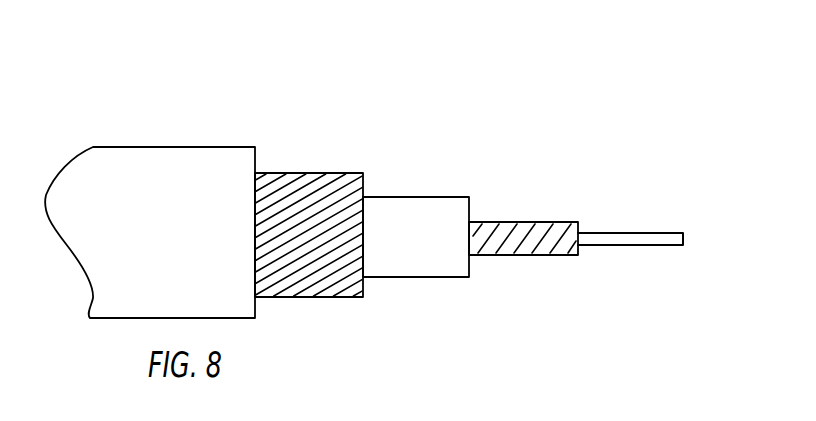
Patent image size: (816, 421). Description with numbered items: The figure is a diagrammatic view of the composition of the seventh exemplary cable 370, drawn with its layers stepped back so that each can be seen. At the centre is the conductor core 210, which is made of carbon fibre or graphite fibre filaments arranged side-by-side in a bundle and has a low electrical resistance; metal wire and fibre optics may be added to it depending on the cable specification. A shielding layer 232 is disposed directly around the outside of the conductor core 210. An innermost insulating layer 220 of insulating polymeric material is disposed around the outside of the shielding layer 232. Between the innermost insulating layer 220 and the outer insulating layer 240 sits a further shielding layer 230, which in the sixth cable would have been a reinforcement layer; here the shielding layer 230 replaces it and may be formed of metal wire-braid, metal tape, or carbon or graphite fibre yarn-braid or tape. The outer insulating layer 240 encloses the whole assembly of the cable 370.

The outer insulating layer 240 is at (137, 148).
The shielding layer 230 is at (273, 173).
The innermost insulating layer 220 is at (415, 196).
The shielding layer 232 is at (497, 222).
The conductor core 210 is at (612, 233).
The seventh exemplary cable 370 is at (457, 126).